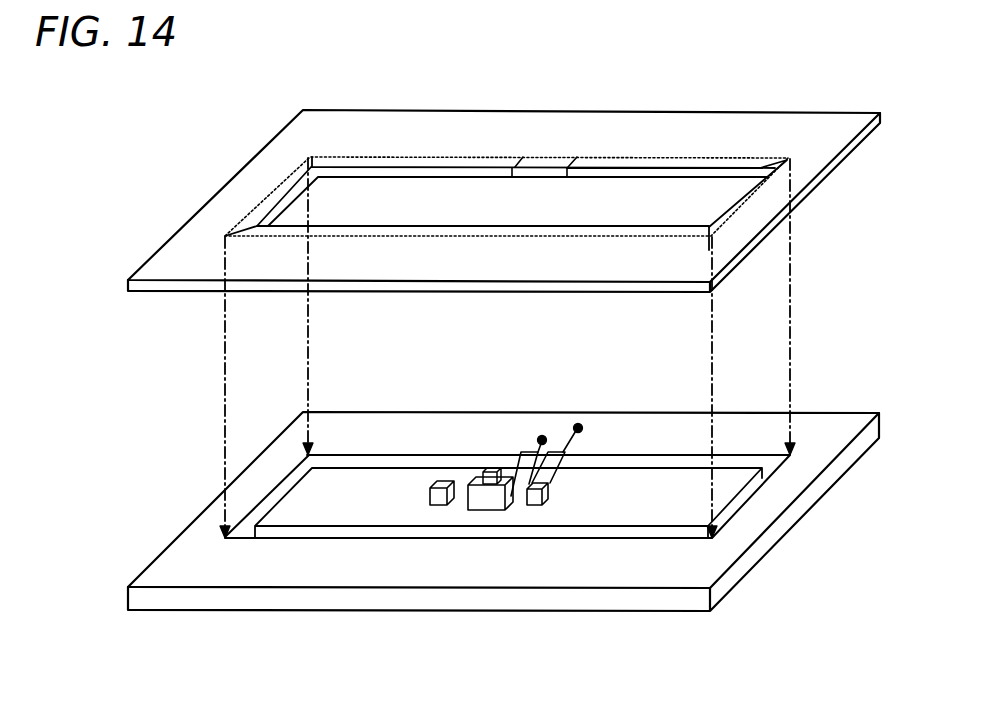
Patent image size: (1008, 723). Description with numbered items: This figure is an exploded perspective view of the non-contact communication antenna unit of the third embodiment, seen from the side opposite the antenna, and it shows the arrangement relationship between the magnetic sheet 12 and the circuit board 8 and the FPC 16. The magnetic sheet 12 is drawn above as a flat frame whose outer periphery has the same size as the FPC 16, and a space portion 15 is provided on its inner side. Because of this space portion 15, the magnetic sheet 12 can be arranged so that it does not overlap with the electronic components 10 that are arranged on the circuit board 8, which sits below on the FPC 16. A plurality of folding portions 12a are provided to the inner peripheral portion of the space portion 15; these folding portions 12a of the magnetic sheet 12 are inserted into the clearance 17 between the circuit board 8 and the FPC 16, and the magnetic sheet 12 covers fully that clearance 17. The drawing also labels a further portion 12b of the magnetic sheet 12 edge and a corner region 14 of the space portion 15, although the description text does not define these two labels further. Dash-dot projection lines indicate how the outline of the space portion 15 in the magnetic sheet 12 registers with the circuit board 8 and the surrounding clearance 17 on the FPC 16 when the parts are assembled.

The circuit board 8 is at (304, 518).
The electronic components 10 is at (485, 467).
The magnetic sheet 12 is at (547, 135).
The folding portions 12a is at (633, 165).
The second portion of frame edge 12b is at (697, 167).
The corner portion of opening 14 is at (773, 158).
The space portion 15 is at (373, 205).
The FPC 16 is at (823, 427).
The clearance 17 is at (245, 539).